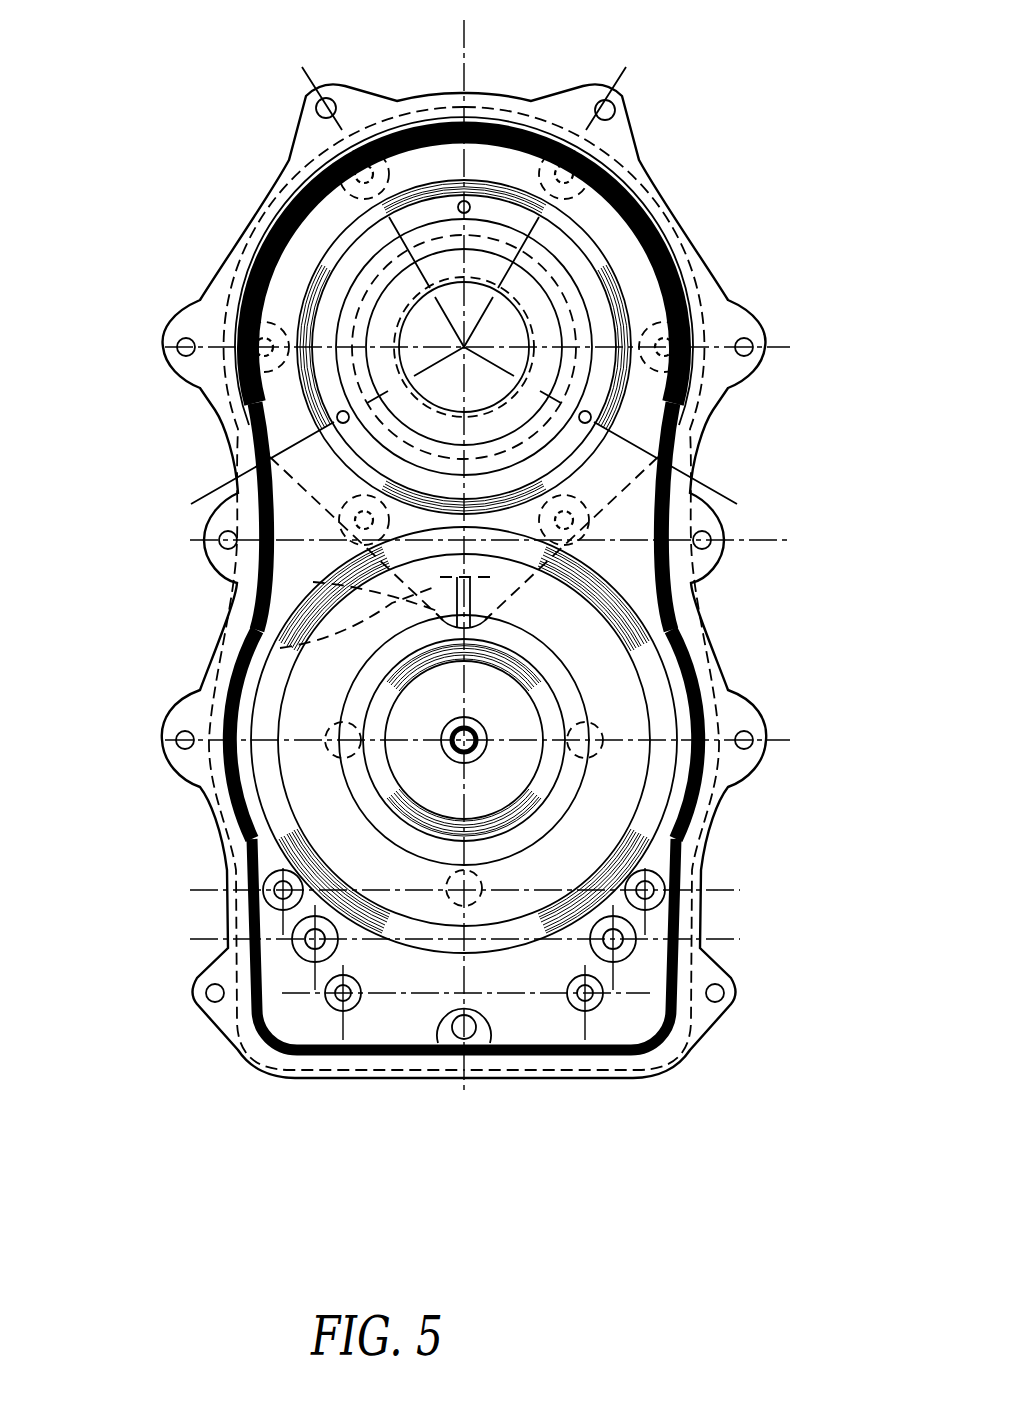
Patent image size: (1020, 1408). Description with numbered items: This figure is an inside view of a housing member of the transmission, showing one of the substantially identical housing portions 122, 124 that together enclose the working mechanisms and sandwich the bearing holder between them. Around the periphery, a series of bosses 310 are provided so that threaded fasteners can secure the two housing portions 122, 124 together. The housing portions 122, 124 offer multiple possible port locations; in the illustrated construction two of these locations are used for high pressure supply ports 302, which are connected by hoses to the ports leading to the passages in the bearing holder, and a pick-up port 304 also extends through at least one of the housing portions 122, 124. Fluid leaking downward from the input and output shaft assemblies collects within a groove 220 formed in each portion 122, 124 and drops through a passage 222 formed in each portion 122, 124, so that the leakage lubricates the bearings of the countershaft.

The bosses 310 is at (358, 107).
The high pressure supply ports 302 is at (290, 932).
The pick-up port 304 is at (470, 1046).
The groove 220 is at (313, 582).
The passage 222 is at (280, 648).
The first portion 122 is at (226, 1025).
The second portion 124 is at (226, 1025).